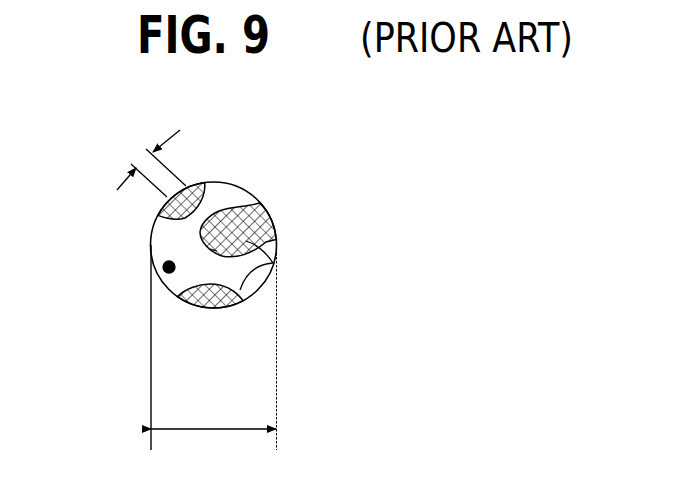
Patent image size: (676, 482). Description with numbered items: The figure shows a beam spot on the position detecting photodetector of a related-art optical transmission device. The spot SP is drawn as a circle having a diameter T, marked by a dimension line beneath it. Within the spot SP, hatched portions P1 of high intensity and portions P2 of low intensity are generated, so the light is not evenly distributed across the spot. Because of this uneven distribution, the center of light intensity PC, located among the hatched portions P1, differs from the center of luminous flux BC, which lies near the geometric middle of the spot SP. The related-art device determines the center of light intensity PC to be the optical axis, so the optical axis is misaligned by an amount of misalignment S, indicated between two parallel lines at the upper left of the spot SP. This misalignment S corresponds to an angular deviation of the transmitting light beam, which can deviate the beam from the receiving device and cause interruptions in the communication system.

The spot SP is at (150, 225).
The amount of misalignment S is at (161, 172).
The center of light intensity PC is at (228, 226).
The hatched portions of high intensity P1 is at (273, 265).
The center of luminous flux BC is at (215, 250).
The portions of low intensity P2 is at (166, 272).
The diameter T is at (214, 347).